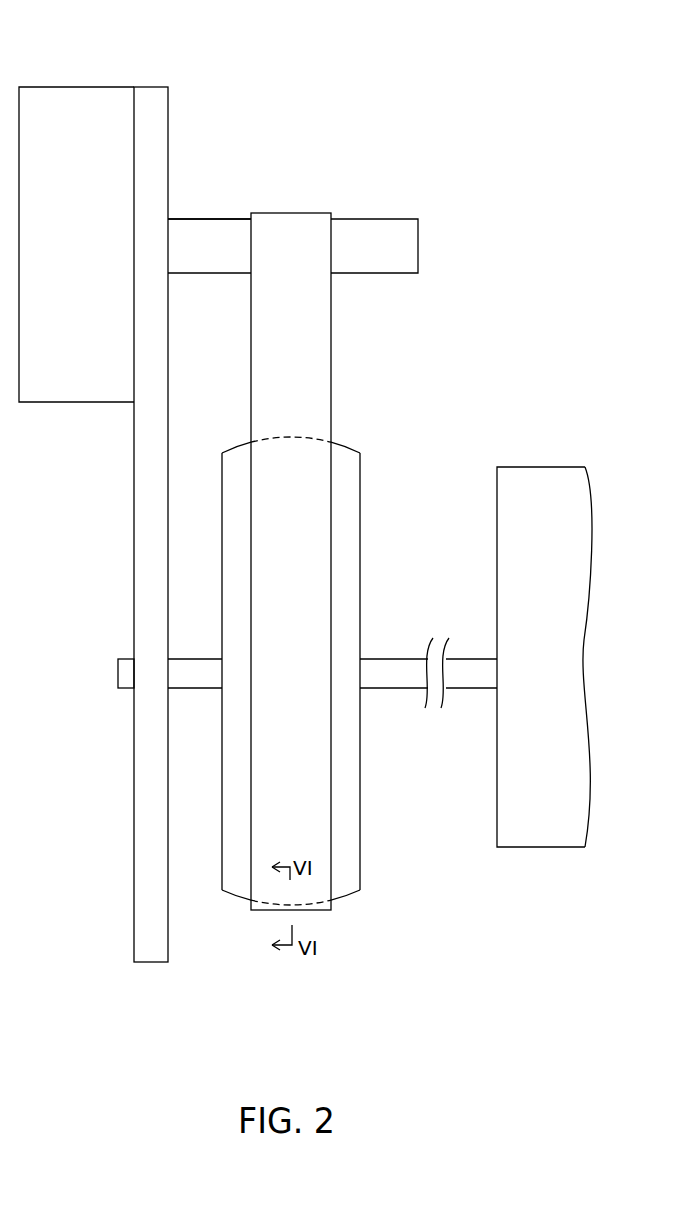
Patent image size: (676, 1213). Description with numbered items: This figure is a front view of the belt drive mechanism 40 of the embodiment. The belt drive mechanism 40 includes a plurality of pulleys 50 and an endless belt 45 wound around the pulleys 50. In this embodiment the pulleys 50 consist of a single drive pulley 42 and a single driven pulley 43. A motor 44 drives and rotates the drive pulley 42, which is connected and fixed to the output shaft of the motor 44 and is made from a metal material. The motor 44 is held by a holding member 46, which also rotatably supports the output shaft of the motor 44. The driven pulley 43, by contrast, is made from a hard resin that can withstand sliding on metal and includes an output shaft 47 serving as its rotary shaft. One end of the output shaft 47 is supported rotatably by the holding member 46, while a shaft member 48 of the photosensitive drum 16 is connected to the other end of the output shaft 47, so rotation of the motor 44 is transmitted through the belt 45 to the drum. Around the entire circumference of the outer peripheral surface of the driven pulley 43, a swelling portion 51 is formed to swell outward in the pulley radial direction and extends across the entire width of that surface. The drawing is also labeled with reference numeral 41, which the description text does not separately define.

The photosensitive drum 16 is at (503, 806).
The belt drive mechanism 40 is at (244, 108).
The rotating unit 41 is at (295, 82).
The drive pulley 42 is at (213, 224).
The driven pulley 43 is at (360, 541).
The motor 44 is at (74, 87).
The endless belt 45 is at (295, 216).
The holding member 46 is at (134, 496).
The output shaft 47 is at (392, 686).
The shaft member 48 is at (468, 686).
The pulleys 50 is at (213, 224).
The swelling portion 51 is at (361, 917).